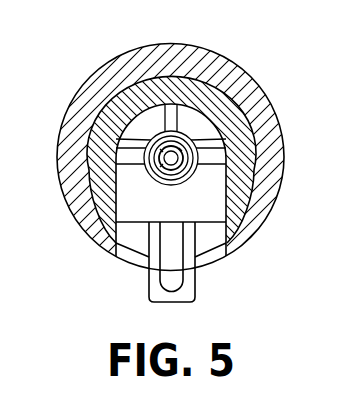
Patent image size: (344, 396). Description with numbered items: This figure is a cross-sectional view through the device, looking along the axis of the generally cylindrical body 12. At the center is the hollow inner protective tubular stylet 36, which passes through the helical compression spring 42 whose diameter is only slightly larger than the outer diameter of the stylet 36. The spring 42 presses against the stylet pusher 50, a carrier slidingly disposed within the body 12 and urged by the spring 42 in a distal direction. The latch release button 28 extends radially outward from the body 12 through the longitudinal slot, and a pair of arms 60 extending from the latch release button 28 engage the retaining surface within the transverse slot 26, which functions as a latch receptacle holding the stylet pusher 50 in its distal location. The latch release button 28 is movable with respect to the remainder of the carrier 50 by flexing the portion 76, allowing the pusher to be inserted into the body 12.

The body 12 is at (240, 63).
The inner protective tubular stylet 36 is at (101, 114).
The portion 76 is at (135, 218).
The helical compression spring 42 is at (199, 140).
The stylet pusher 50 is at (165, 152).
The transverse slot 26 is at (134, 252).
The arms 60 is at (205, 247).
The latch release button 28 is at (163, 302).